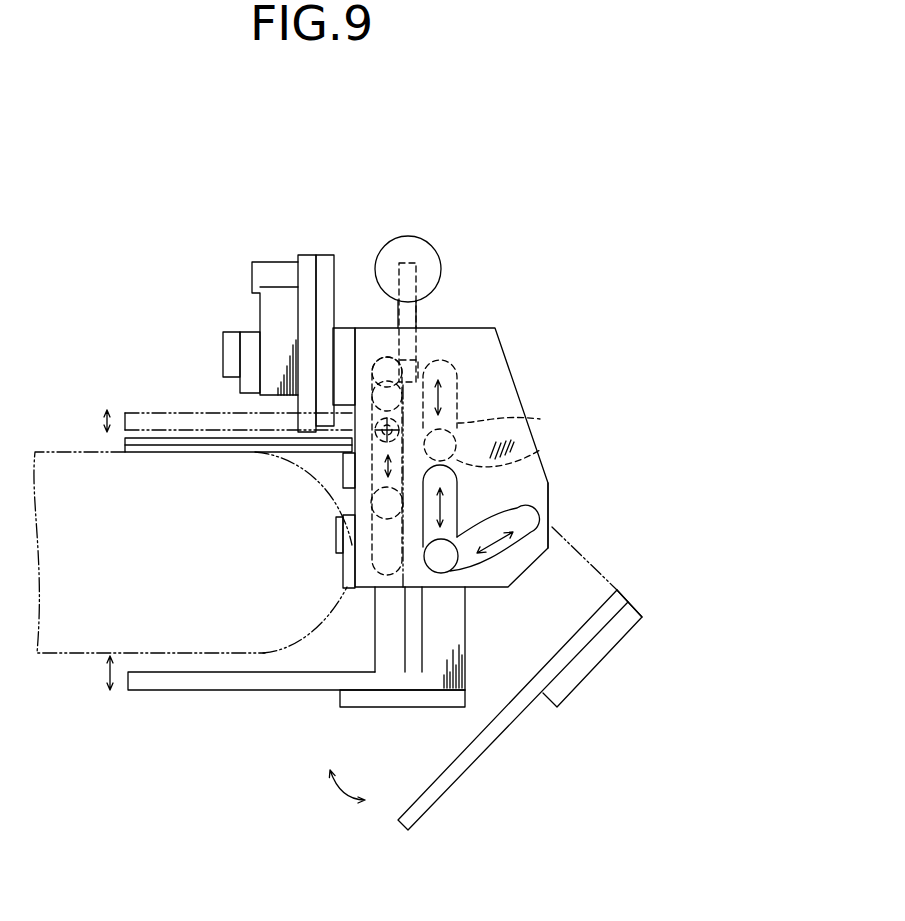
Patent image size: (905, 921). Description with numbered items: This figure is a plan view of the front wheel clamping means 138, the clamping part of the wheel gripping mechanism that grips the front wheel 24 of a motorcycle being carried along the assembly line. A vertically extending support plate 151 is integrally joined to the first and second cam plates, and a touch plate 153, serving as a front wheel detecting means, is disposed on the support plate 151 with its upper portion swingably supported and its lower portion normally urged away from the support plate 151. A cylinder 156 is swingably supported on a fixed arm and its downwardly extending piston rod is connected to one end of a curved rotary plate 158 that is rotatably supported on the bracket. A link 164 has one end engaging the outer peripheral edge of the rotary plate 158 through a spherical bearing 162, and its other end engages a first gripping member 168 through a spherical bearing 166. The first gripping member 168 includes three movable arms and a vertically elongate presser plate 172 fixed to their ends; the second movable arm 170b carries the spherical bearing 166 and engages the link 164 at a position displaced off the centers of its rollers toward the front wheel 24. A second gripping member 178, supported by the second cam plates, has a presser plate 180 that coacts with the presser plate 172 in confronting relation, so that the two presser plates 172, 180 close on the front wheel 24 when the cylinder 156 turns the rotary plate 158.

The front wheel 24 is at (63, 653).
The front wheel clamping means 138 is at (555, 236).
The support plate 151 is at (343, 524).
The touch plate 153 is at (343, 552).
The cylinder 156 is at (408, 238).
The rotary plate 158 is at (420, 304).
The spherical bearing 162 is at (388, 355).
The link 164 is at (372, 428).
The spherical bearing 166 is at (372, 442).
The first gripping member 168 is at (377, 714).
The second movable arm 170b is at (387, 657).
The presser plate 172 is at (147, 689).
The second gripping member 178 is at (135, 406).
The presser plate 180 is at (143, 448).